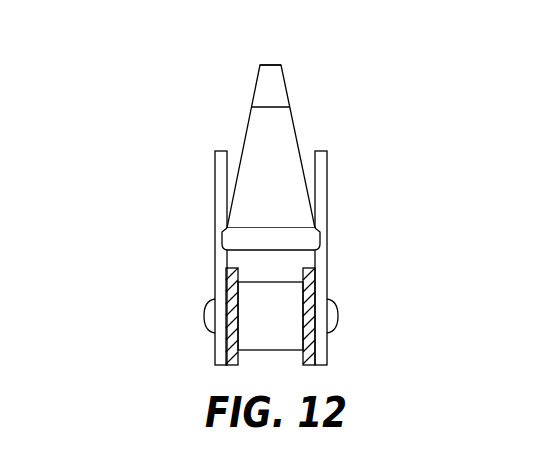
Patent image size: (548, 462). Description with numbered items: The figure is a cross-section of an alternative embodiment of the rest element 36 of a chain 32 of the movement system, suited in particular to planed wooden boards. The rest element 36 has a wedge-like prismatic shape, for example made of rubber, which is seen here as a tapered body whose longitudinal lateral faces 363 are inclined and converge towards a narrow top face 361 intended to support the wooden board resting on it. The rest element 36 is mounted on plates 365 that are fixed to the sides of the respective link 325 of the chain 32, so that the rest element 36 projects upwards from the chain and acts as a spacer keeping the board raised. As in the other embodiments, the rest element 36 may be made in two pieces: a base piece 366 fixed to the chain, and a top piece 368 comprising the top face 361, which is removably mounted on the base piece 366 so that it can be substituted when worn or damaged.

The chain 32 is at (392, 275).
The rest element 36 is at (269, 133).
The link 325 is at (225, 290).
The top face 361 is at (273, 65).
The longitudinal lateral face 363 is at (244, 145).
The plates 365 is at (226, 356).
The base piece 366 is at (290, 213).
The top piece 368 is at (262, 88).